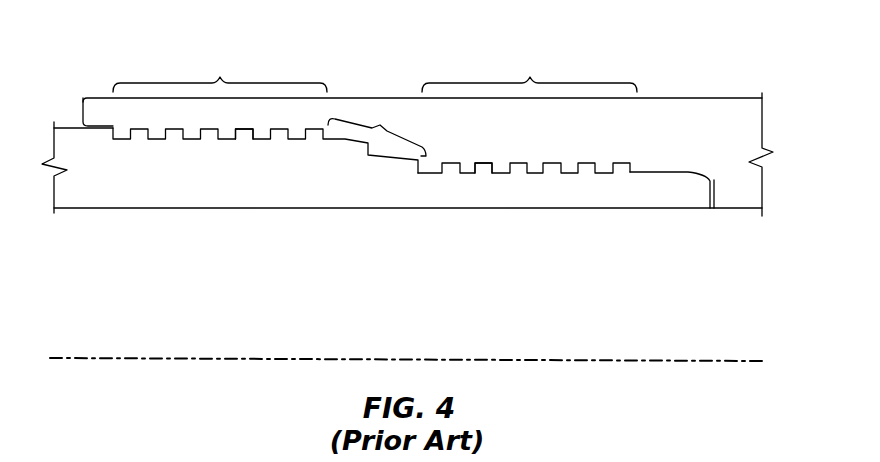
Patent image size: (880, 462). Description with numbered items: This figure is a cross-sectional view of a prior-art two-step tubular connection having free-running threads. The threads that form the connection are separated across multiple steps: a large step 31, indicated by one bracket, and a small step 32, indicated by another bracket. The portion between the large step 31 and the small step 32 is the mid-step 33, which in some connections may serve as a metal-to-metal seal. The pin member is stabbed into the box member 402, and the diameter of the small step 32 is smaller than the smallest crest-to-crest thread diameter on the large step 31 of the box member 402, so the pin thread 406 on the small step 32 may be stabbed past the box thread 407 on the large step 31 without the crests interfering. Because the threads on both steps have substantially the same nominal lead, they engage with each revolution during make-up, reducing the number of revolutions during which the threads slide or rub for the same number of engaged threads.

The large step 31 is at (220, 71).
The small step 32 is at (529, 72).
The mid-step 33 is at (377, 128).
The box member 402 is at (88, 188).
The pin thread 406 is at (242, 140).
The box thread 407 is at (225, 133).